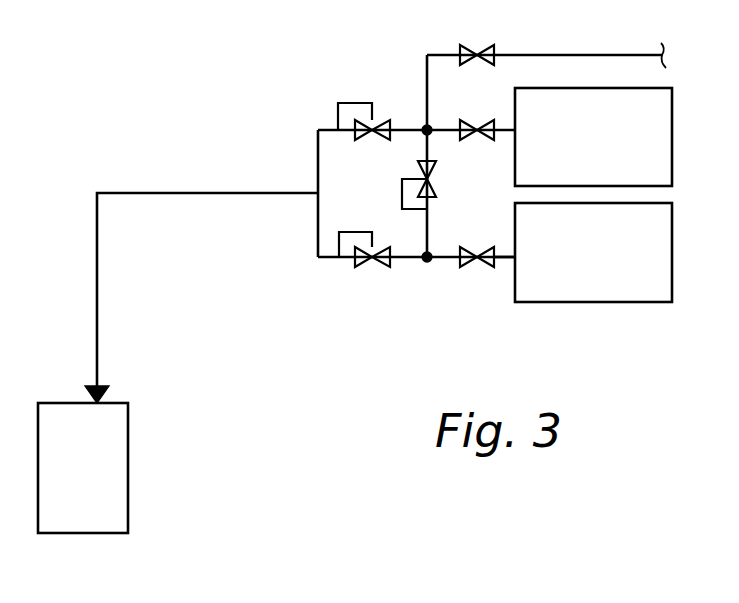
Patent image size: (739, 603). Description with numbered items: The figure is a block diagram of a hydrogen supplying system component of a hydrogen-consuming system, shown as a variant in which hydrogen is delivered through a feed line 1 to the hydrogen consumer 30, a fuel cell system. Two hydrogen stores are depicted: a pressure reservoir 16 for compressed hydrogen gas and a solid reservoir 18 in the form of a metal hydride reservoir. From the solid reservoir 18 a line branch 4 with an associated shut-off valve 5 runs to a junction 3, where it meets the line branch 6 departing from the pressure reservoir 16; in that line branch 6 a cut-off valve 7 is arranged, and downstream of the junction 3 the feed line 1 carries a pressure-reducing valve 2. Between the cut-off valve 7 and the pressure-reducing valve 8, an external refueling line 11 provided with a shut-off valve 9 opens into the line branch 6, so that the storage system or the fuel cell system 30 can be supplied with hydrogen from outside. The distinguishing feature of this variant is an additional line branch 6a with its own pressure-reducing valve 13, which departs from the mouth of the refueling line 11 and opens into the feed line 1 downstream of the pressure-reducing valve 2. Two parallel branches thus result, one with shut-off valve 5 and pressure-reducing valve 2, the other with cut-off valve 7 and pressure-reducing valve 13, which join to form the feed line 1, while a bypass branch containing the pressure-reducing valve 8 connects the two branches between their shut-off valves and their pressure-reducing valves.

The feed line 1 is at (173, 195).
The pressure-reducing valve 2 is at (366, 267).
The junction 3 is at (427, 264).
The line branch 4 is at (502, 268).
The shut-off valve 5 is at (470, 267).
The line branch 6 is at (428, 150).
The additional line branch 6a is at (318, 158).
The cut-off valve 7 is at (470, 140).
The pressure-reducing valve 8 is at (437, 181).
The shut-off valve 9 is at (468, 46).
The external refueling line 11 is at (535, 55).
The pressure-reducing valve 13 is at (365, 141).
The pressure reservoir 16 is at (672, 136).
The solid reservoir 18 is at (672, 258).
The hydrogen consumer 30 is at (128, 458).